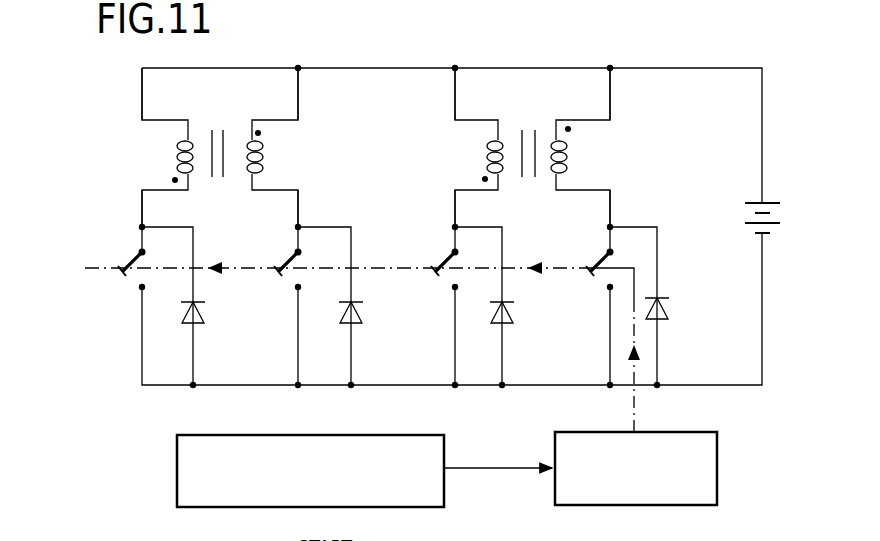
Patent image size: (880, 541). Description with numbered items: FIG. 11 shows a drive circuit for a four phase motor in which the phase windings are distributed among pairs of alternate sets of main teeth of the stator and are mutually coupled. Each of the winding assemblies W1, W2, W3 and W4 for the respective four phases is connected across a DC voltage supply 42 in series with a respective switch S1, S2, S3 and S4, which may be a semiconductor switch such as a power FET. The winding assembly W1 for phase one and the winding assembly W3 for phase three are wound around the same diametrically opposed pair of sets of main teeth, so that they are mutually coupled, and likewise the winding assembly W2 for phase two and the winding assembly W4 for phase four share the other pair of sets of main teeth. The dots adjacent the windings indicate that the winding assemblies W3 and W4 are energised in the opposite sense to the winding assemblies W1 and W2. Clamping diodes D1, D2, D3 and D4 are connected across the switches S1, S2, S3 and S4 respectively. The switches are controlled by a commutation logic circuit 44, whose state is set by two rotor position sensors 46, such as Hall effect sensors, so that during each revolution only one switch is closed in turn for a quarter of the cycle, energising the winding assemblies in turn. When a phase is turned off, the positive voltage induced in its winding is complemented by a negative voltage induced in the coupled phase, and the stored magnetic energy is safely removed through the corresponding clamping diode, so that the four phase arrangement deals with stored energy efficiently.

The winding assembly W1 is at (178, 152).
The winding assembly W3 is at (262, 157).
The winding assembly W2 is at (488, 153).
The winding assembly W4 is at (566, 157).
The switch S1 is at (126, 248).
The switch S3 is at (287, 247).
The switch S2 is at (444, 247).
The switch S4 is at (600, 247).
The clamping diode D1 is at (204, 321).
The clamping diode D3 is at (362, 321).
The clamping diode D2 is at (513, 321).
The clamping diode D4 is at (668, 317).
The DC voltage supply 42 is at (752, 226).
The rotor position sensors 46 is at (416, 435).
The commutation logic circuit 44 is at (716, 432).